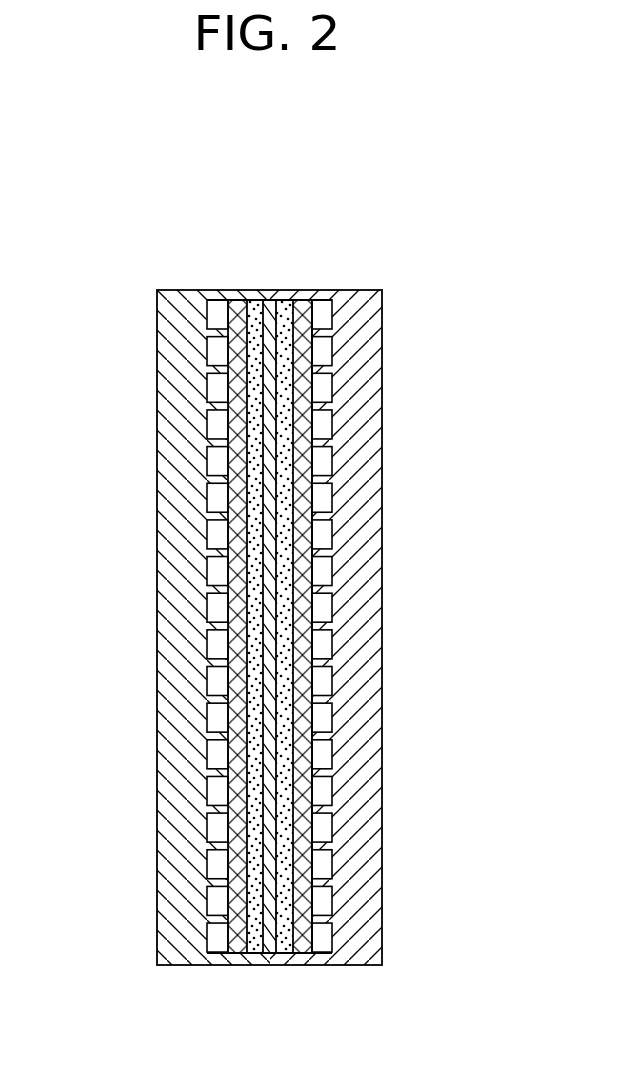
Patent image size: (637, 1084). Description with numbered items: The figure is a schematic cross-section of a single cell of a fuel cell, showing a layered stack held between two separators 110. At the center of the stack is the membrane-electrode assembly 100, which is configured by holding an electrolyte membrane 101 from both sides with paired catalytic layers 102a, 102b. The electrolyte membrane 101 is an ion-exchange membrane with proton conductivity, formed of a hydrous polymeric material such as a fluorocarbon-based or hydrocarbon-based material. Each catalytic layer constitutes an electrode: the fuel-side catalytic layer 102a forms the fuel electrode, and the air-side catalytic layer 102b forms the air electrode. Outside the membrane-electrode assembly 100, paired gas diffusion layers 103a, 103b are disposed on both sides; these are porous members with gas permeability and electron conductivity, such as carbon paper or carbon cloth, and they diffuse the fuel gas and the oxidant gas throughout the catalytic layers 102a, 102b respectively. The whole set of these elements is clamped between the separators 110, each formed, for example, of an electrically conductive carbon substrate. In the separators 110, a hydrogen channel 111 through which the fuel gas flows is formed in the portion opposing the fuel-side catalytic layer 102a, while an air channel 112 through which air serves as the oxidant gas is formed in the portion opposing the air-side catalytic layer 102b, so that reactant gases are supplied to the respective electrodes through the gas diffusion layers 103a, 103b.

The membrane-electrode assembly 100 is at (195, 196).
The electrolyte membrane 101 is at (274, 298).
The fuel-side catalytic layer 102a is at (250, 299).
The air-side catalytic layer 102b is at (285, 299).
The gas diffusion layer 103a is at (218, 299).
The gas diffusion layer 103b is at (322, 299).
The separator 110 is at (182, 580).
The hydrogen channel 111 is at (218, 390).
The air channel 112 is at (320, 390).